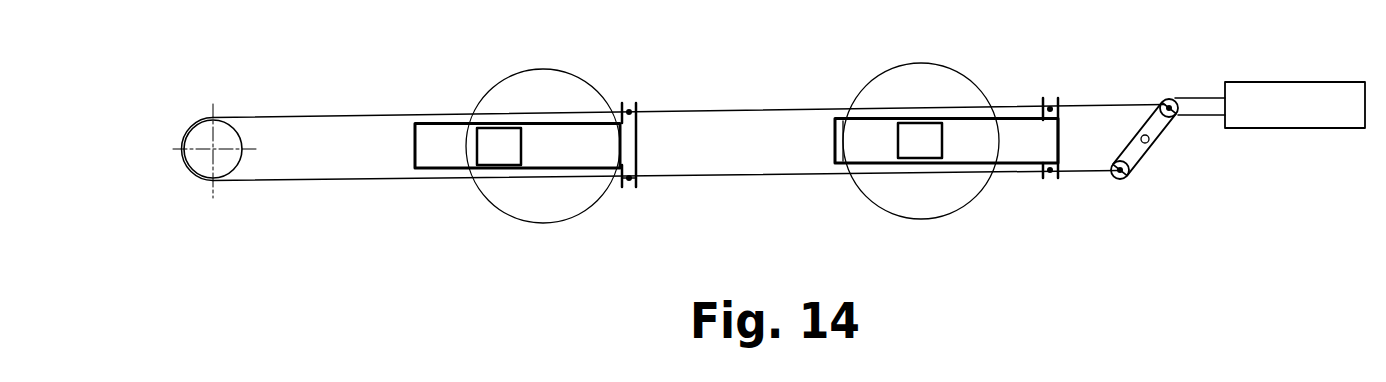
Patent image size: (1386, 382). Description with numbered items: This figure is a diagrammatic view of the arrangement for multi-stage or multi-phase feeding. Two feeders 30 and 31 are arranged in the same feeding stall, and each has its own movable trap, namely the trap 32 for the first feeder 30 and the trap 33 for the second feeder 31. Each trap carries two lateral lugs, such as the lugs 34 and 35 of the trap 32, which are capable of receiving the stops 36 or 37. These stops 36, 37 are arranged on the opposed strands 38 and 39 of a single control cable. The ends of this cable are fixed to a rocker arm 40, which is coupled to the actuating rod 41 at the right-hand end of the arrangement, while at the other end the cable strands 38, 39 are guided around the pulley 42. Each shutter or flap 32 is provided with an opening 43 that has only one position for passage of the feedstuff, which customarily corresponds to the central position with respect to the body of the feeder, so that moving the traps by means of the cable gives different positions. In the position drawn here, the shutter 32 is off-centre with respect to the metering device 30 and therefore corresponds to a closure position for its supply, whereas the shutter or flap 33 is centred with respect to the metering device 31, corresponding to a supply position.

The feeder 30 is at (585, 82).
The feeder 31 is at (970, 78).
The movable trap 32 is at (552, 157).
The movable trap 33 is at (1022, 148).
The lateral lug 34 is at (638, 107).
The lateral lug 35 is at (640, 183).
The stop 36 is at (627, 182).
The stop 37 is at (1050, 100).
The strand of control cable 38 is at (778, 173).
The strand of control cable 39 is at (768, 110).
The rocker arm 40 is at (1140, 150).
The actuating rod 41 is at (1202, 105).
The pulley 42 is at (220, 137).
The opening 43 is at (492, 153).